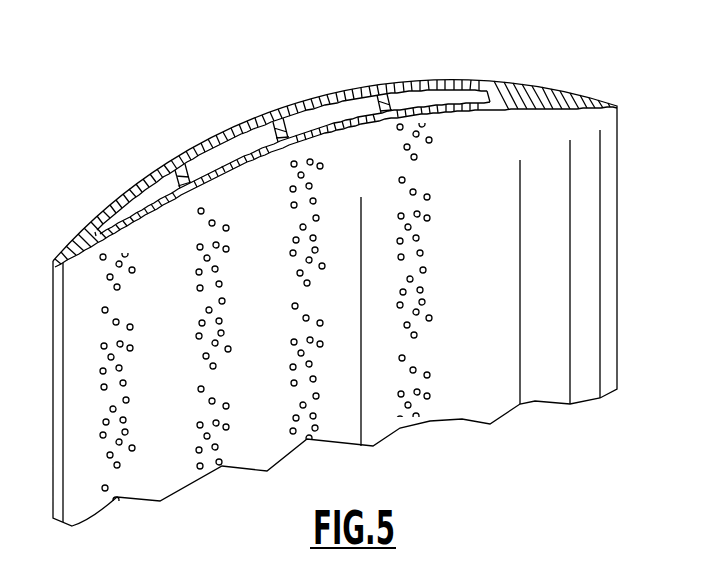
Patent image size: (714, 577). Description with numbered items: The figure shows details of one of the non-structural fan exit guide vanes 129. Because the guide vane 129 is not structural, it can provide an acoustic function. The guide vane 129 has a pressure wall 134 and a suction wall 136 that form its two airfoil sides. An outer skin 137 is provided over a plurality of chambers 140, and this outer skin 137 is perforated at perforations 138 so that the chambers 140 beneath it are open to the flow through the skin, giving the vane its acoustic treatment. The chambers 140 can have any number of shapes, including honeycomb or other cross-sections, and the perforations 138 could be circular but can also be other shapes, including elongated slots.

The fan exit guide vane 129 is at (567, 456).
The pressure wall 134 is at (506, 172).
The suction wall 136 is at (440, 81).
The outer skin 137 is at (495, 218).
The perforations 138 is at (430, 270).
The chambers 140 is at (312, 120).